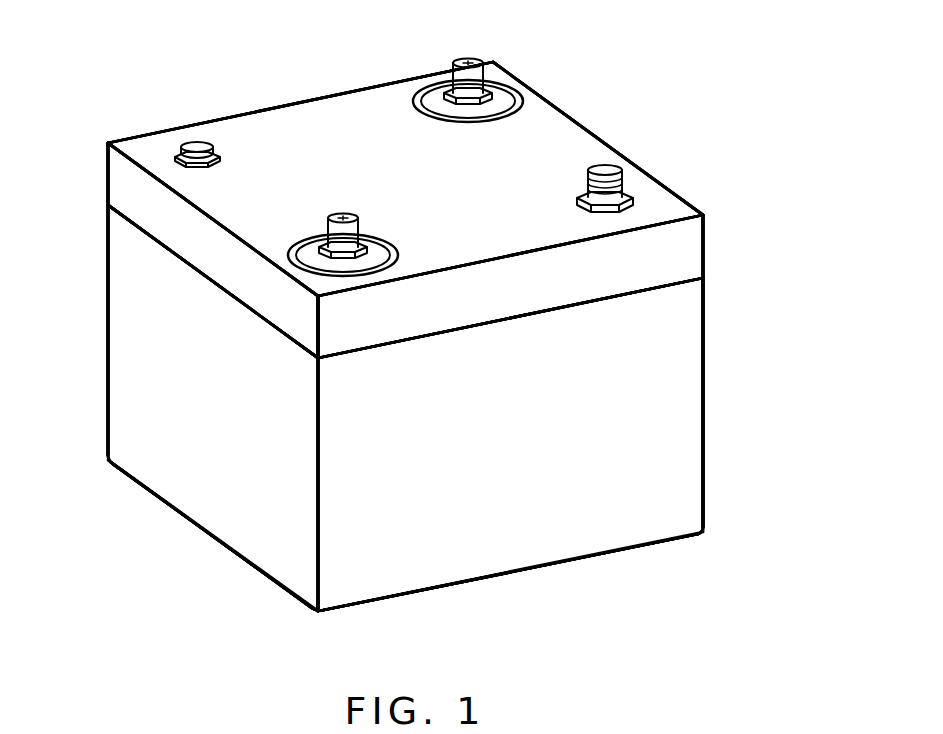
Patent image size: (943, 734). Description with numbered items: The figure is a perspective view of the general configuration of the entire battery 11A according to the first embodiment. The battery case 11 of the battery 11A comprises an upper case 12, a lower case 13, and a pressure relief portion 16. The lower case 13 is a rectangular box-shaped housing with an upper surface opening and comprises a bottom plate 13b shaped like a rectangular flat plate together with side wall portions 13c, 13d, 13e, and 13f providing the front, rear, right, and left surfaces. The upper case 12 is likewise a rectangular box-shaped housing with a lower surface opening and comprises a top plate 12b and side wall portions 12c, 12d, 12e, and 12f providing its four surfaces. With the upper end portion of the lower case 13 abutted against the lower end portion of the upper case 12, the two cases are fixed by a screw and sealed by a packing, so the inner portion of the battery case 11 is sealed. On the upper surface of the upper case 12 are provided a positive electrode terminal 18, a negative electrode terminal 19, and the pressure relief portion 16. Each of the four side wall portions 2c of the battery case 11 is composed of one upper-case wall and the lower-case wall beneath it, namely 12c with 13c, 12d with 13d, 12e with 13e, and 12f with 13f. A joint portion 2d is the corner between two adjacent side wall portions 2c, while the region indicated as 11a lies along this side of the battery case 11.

The battery 11A is at (750, 96).
The battery case 11 is at (748, 364).
The corner portion of case 11a is at (722, 462).
The upper case 12 is at (622, 153).
The top plate 12b is at (547, 125).
The side wall portion 12c is at (120, 182).
The side wall portion 12d is at (684, 195).
The side wall portion 12e is at (680, 257).
The side wall portion 12f is at (313, 100).
The lower case 13 is at (707, 505).
The bottom plate 13b is at (562, 563).
The side wall portion 13c is at (138, 395).
The side wall portion 13d is at (707, 420).
The side wall portion 13e is at (445, 557).
The side wall portion 13f is at (108, 327).
The pressure relief portion 16 is at (197, 143).
The positive electrode terminal 18 is at (468, 59).
The negative electrode terminal 19 is at (344, 214).
The side wall portion 2c is at (680, 318).
The joint portion 2d is at (108, 245).